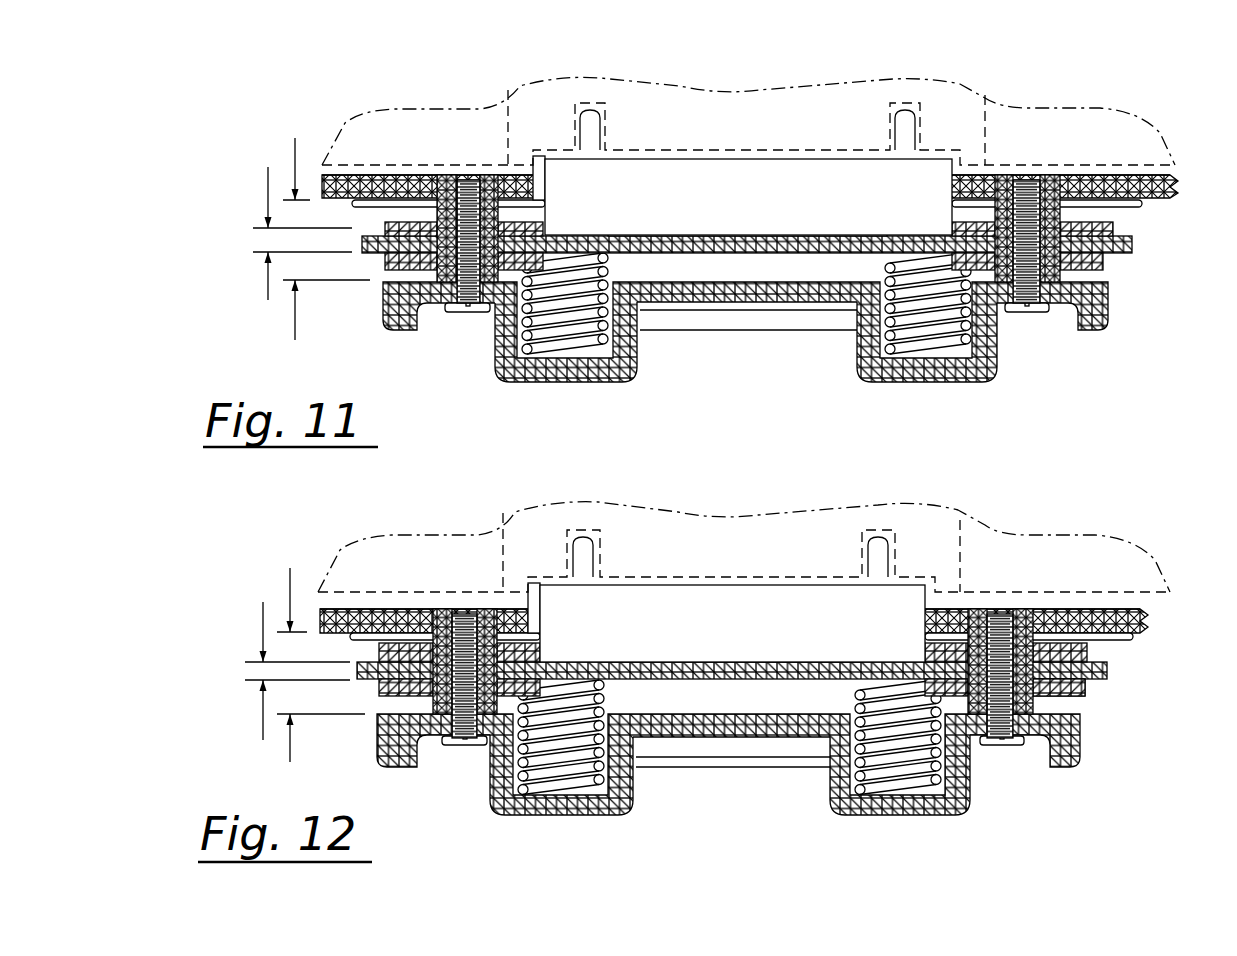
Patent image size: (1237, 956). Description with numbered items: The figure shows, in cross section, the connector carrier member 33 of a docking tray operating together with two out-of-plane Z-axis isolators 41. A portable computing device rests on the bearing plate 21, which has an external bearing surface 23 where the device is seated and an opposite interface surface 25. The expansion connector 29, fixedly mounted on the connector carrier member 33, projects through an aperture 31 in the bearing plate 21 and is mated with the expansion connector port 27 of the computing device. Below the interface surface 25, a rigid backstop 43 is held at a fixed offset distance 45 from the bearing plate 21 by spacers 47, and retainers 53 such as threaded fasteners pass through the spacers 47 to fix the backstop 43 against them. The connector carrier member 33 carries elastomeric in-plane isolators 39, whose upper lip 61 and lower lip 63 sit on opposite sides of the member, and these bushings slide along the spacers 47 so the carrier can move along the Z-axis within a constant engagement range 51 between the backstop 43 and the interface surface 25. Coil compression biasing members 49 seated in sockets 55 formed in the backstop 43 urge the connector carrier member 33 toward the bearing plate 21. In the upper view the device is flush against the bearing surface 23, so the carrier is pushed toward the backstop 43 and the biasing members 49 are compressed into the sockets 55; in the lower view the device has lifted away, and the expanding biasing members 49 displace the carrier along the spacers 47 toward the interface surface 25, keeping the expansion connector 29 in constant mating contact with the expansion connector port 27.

In FIG. 11, the bearing plate 21 is at (1175, 193).
In FIG. 12, the bearing plate 21 is at (1150, 625).
In FIG. 11, the external bearing surface 23 is at (1137, 175).
In FIG. 12, the external bearing surface 23 is at (1132, 609).
In FIG. 11, the interface surface 25 is at (1150, 205).
In FIG. 12, the interface surface 25 is at (1142, 641).
In FIG. 11, the expansion connector port 27 is at (733, 130).
In FIG. 12, the expansion connector port 27 is at (726, 560).
In FIG. 11, the expansion connector 29 is at (733, 204).
In FIG. 12, the expansion connector 29 is at (726, 637).
In FIG. 11, the aperture 31 is at (536, 158).
In FIG. 12, the aperture 31 is at (530, 585).
In FIG. 11, the connector carrier member 33 is at (1135, 247).
In FIG. 12, the connector carrier member 33 is at (1108, 675).
In FIG. 11, the in-plane isolators 39 is at (385, 262).
In FIG. 12, the in-plane isolators 39 is at (379, 650).
In FIG. 11, the out-of-plane Z-axis isolators 41 is at (506, 378).
In FIG. 12, the out-of-plane Z-axis isolators 41 is at (497, 812).
In FIG. 11, the backstop 43 is at (779, 303).
In FIG. 12, the backstop 43 is at (752, 738).
In FIG. 11, the fixed offset distance 45 is at (326, 251).
In FIG. 12, the fixed offset distance 45 is at (321, 652).
In FIG. 11, the spacer 47 is at (397, 212).
In FIG. 12, the spacer 47 is at (422, 696).
In FIG. 11, the biasing members 49 is at (564, 338).
In FIG. 12, the biasing members 49 is at (561, 772).
In FIG. 11, the constant engagement range 51 is at (302, 248).
In FIG. 12, the constant engagement range 51 is at (297, 683).
In FIG. 11, the retainers 53 is at (465, 312).
In FIG. 12, the retainers 53 is at (461, 748).
In FIG. 11, the sockets 55 is at (637, 366).
In FIG. 12, the sockets 55 is at (633, 796).
In FIG. 11, the upper lip 61 is at (1095, 222).
In FIG. 12, the upper lip 61 is at (1090, 658).
In FIG. 11, the lower lip 63 is at (1103, 262).
In FIG. 12, the lower lip 63 is at (1078, 698).